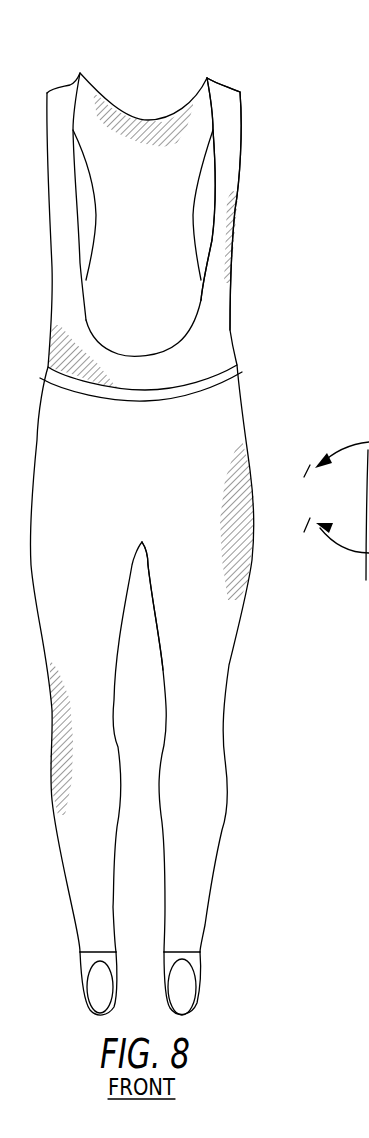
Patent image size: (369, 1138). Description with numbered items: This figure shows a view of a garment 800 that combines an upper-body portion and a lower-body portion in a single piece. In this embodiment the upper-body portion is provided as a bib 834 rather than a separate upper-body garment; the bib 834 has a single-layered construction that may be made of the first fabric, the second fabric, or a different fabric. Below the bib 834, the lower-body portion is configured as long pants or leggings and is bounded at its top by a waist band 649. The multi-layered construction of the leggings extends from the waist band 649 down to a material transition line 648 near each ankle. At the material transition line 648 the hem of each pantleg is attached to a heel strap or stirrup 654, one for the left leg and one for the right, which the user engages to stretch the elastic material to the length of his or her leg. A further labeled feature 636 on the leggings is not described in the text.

The garment 800 is at (125, 53).
The bib 834 is at (368, 216).
The waist band 649 is at (188, 387).
The leg portion 636 is at (163, 545).
The material transition line 648 is at (180, 952).
The heel strap or stirrup 654 is at (178, 992).